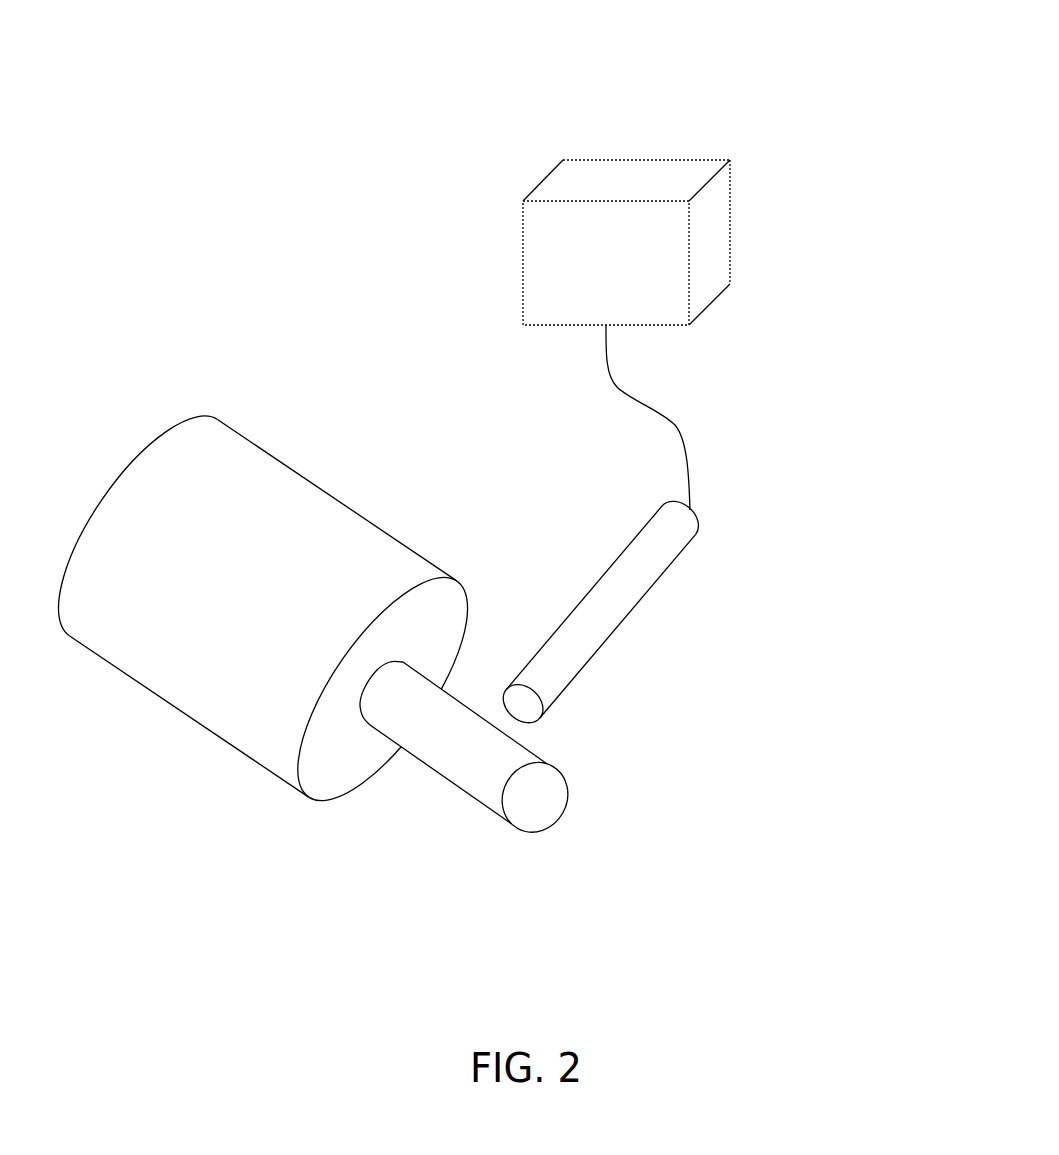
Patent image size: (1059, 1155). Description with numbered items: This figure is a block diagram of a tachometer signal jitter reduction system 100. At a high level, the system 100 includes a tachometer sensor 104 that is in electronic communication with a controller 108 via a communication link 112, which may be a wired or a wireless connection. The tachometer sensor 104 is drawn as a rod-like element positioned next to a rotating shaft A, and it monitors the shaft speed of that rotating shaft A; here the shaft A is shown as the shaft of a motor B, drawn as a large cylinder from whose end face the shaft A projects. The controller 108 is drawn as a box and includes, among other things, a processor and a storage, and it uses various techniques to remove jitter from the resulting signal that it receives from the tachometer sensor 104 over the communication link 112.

The system 100 is at (391, 200).
The tachometer sensor 104 is at (618, 627).
The controller 108 is at (646, 158).
The communication link 112 is at (717, 424).
The rotating shaft A is at (443, 777).
The motor B is at (313, 420).